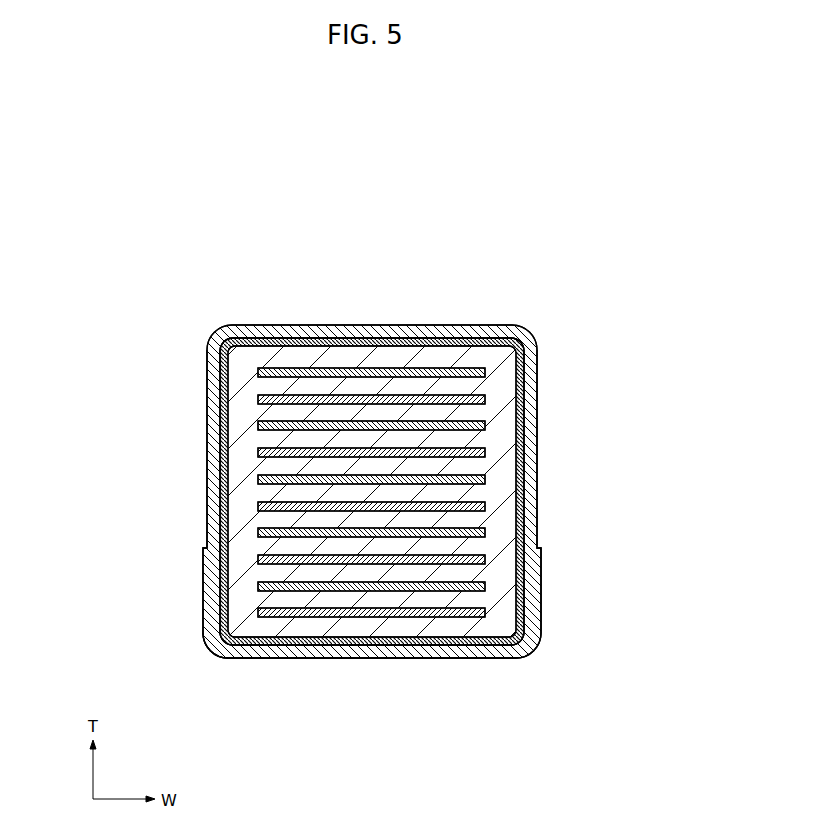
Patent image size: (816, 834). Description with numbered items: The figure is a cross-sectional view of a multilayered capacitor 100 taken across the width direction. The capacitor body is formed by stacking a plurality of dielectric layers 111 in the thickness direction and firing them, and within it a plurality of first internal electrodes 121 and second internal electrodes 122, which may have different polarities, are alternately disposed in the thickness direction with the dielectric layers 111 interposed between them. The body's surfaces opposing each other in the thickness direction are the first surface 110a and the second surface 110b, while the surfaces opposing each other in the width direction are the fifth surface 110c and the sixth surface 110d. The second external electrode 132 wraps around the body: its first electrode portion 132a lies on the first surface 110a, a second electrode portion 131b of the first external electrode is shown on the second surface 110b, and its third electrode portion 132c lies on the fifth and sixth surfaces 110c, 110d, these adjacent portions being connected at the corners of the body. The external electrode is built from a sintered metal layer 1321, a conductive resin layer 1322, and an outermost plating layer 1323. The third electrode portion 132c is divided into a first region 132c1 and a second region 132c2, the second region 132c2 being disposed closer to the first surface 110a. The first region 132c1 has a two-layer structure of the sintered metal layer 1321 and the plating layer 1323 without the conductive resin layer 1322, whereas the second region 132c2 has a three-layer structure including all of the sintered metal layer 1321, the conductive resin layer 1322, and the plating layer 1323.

The multilayered capacitor 100 is at (538, 306).
The dielectric layer 111 is at (500, 362).
The first surface 110a is at (288, 637).
The second surface 110b is at (416, 343).
The fifth surface 110c is at (207, 390).
The sixth surface 110d is at (538, 393).
The first internal electrode 121 is at (369, 612).
The second internal electrode 122 is at (398, 423).
The second electrode portion of first external electrode 131b is at (246, 330).
The second external electrode 132 is at (199, 653).
The first electrode portion of second external electrode 132a is at (393, 656).
The third electrode portion of second external electrode 132c is at (113, 458).
The first region 132c1 is at (207, 462).
The second region 132c2 is at (204, 553).
The sintered metal layer 1321 is at (309, 344).
The conductive resin layer 1322 is at (447, 659).
The plating layer 1323 is at (247, 657).